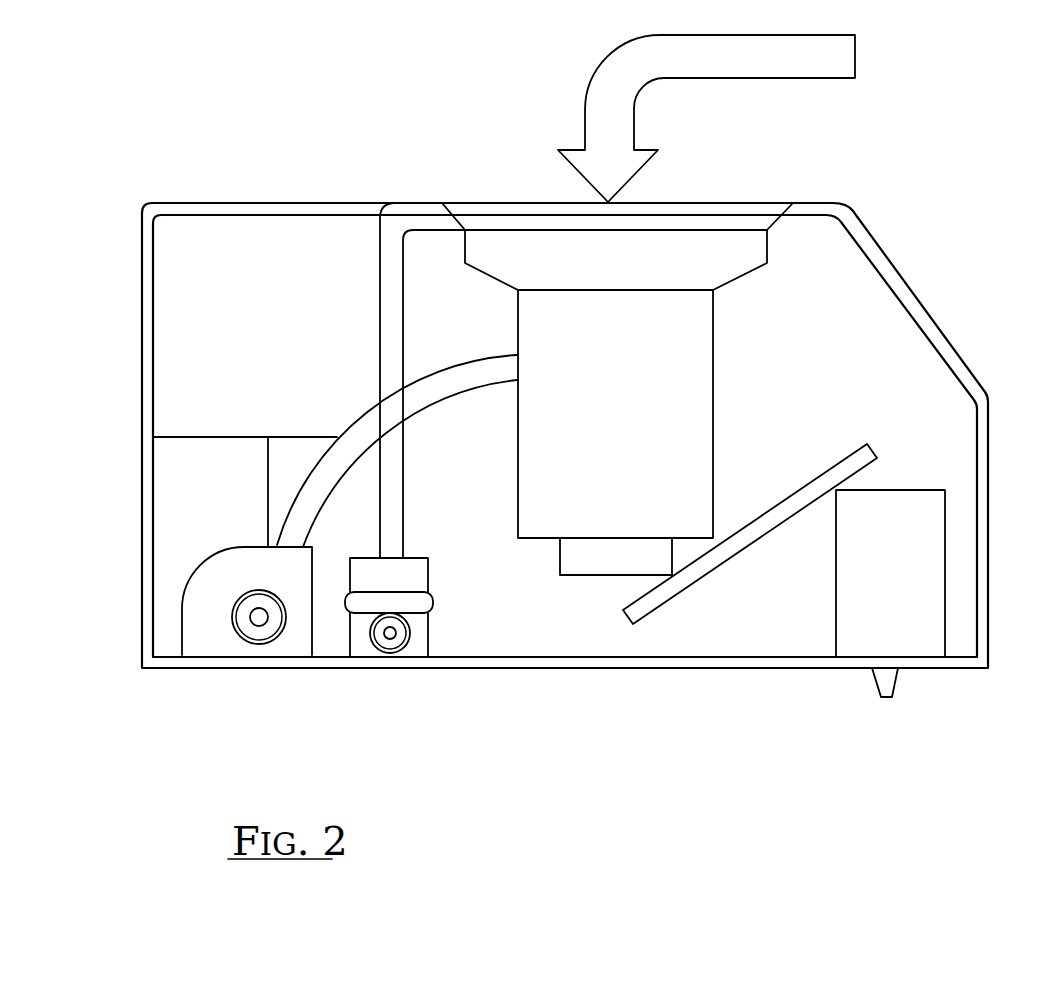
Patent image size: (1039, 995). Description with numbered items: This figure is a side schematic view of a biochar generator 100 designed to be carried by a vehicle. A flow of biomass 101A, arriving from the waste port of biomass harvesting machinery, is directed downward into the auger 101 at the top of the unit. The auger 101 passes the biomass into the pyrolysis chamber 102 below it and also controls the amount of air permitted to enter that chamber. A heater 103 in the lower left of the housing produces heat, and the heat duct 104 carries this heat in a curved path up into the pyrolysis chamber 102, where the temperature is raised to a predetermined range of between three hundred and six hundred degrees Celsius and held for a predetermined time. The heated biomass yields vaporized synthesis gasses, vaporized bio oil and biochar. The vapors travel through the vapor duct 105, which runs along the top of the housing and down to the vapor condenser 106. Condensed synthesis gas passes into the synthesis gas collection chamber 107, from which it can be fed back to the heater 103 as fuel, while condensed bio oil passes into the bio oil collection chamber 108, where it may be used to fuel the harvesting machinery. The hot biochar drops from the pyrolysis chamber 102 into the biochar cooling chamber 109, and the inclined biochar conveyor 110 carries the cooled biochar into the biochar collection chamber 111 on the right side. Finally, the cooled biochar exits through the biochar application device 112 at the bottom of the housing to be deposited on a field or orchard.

The biochar generator 100 is at (667, 670).
The auger 101 is at (763, 248).
The flow of biomass 101A is at (785, 70).
The pyrolysis chamber 102 is at (708, 345).
The heater 103 is at (198, 594).
The heat duct 104 is at (365, 422).
The vapor duct 105 is at (388, 233).
The vapor condenser 106 is at (360, 645).
The synthesis gas collection chamber 107 is at (285, 446).
The bio oil collection chamber 108 is at (184, 448).
The biochar cooling chamber 109 is at (567, 568).
The biochar conveyor 110 is at (863, 463).
The biochar collection chamber 111 is at (937, 606).
The biochar application device 112 is at (888, 678).